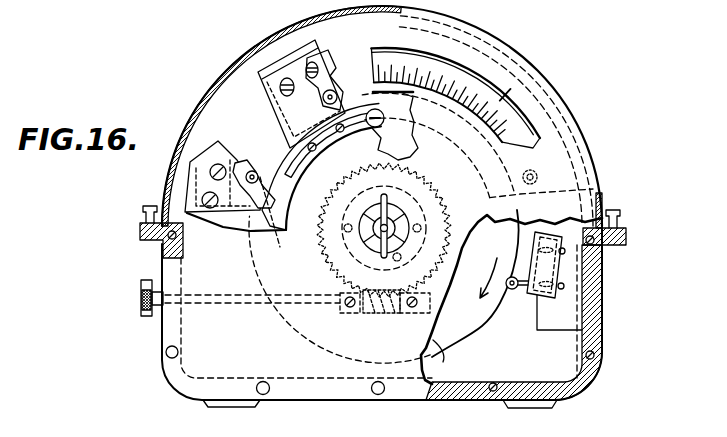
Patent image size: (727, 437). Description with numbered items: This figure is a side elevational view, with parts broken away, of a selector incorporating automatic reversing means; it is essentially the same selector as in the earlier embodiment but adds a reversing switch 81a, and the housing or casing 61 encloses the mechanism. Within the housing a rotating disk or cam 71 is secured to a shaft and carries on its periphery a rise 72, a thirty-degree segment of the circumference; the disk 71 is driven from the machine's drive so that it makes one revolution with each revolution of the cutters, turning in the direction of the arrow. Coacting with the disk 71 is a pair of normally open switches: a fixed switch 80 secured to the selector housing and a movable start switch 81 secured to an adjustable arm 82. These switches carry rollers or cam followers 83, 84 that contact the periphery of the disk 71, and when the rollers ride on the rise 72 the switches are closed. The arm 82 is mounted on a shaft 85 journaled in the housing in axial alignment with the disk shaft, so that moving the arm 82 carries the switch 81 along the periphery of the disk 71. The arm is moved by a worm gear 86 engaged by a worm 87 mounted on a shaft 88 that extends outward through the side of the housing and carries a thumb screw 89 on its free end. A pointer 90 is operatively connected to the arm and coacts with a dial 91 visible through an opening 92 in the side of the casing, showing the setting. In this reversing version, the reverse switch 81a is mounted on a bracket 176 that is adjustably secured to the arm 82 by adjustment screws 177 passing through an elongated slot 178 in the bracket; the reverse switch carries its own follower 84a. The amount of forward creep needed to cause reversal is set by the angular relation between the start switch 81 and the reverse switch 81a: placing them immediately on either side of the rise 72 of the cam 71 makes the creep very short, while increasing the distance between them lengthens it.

The casing 61 is at (508, 46).
The rotating disk or cam 71 is at (438, 356).
The rise 72 is at (497, 318).
The fixed switch 80 is at (551, 232).
The movable switch 81 is at (287, 54).
The reversing switch 81a is at (248, 148).
The adjustable arm 82 is at (333, 60).
The roller or cam follower 83 is at (513, 290).
The roller or cam follower 84 is at (340, 82).
The lever 84a is at (260, 191).
The shaft 85 is at (390, 225).
The worm gear 86 is at (428, 184).
The worm 87 is at (380, 318).
The shaft 88 is at (215, 272).
The thumb screw 89 is at (163, 306).
The pointer 90 is at (408, 150).
The dial 91 is at (416, 63).
The opening 92 is at (505, 93).
The bracket 176 is at (270, 238).
The adjustment screws 177 is at (273, 100).
The elongated slot 178 is at (382, 113).